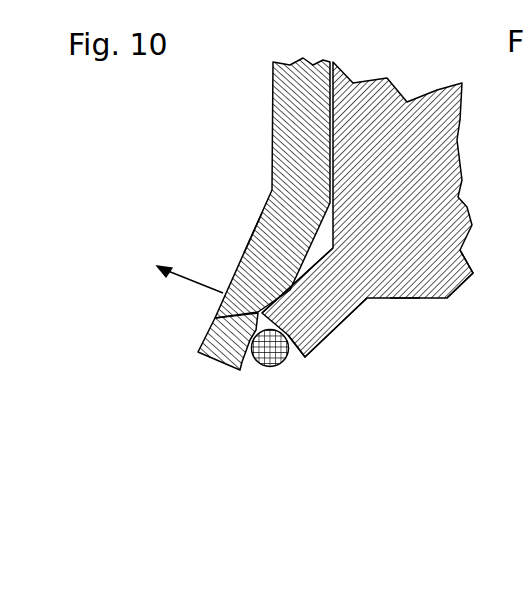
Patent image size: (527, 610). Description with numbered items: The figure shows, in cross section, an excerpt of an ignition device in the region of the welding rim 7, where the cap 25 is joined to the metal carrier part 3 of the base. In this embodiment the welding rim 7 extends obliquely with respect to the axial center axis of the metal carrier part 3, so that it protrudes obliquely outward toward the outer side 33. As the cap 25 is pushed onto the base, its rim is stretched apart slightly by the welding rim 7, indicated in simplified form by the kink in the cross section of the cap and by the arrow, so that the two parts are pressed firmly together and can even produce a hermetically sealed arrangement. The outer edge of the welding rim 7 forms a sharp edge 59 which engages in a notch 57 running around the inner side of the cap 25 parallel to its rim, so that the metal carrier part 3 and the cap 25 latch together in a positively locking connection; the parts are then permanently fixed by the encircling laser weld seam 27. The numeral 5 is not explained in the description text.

The metal carrier part 3 is at (413, 195).
The sealing element 5 is at (405, 280).
The welding rim 7 is at (325, 318).
The cap 25 is at (273, 149).
The laser weld seam 27 is at (268, 366).
The outer side 33 is at (430, 300).
The notch 57 is at (215, 318).
The sharp edge 59 is at (243, 253).